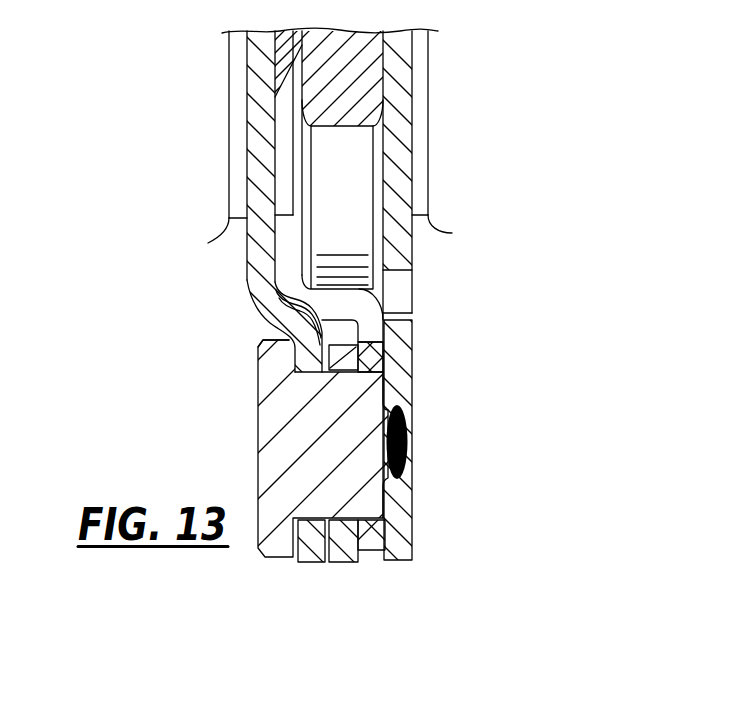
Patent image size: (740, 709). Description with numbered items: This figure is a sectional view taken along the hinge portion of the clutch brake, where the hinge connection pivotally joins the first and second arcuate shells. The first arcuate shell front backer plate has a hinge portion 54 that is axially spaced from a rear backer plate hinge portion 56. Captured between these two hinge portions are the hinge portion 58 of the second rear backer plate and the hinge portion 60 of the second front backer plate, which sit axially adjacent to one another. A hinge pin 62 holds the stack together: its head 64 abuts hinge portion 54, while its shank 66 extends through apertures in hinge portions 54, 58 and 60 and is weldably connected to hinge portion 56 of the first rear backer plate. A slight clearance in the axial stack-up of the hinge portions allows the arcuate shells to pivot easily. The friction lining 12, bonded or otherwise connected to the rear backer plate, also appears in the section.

The friction lining 12 is at (321, 210).
The hinge portion of the first arcuate shell front backer plate 54 is at (312, 562).
The rear backer plate hinge portion 56 is at (413, 550).
The hinge portion of the second rear backer plate 58 is at (370, 552).
The hinge portion of the second front backer plate 60 is at (337, 562).
The hinge pin 62 is at (258, 443).
The head 64 is at (258, 340).
The shank 66 is at (347, 383).